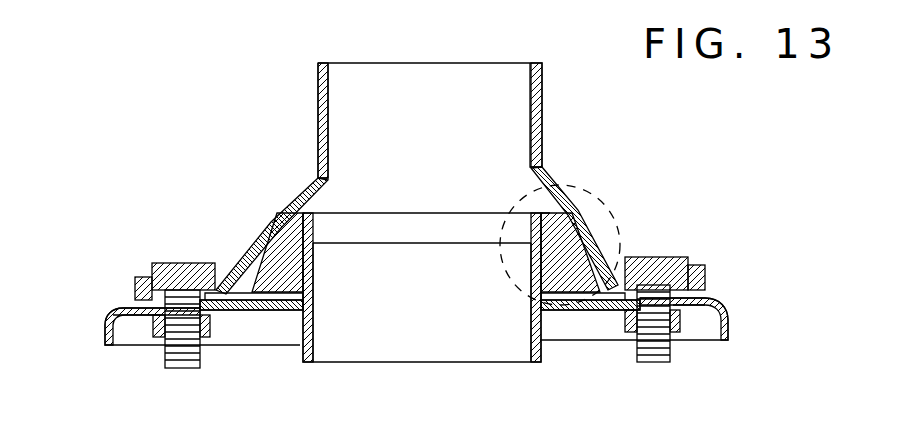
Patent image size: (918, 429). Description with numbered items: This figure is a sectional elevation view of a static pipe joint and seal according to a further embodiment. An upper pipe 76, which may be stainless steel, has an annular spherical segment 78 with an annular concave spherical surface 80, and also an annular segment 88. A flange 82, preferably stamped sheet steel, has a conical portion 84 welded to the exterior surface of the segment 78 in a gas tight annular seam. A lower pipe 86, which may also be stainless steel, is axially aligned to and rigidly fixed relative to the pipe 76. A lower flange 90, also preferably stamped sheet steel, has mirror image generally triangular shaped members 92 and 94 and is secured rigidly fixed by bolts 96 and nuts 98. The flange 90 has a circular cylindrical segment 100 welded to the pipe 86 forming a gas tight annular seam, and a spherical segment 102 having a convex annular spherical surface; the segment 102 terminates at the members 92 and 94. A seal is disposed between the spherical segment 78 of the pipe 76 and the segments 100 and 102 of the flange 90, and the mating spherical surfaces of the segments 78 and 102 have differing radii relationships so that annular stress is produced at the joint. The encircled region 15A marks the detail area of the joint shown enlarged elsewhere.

The pipe 76 is at (544, 100).
The annular spherical segment 78 is at (300, 188).
The annular concave spherical surface 80 is at (318, 202).
The flange 82 is at (278, 212).
The conical portion 84 is at (246, 252).
The pipe 86 is at (372, 364).
The annular segment 88 is at (318, 266).
The lower flange 90 is at (733, 298).
The generally triangular shaped member 92 is at (705, 341).
The generally triangular shaped member 94 is at (130, 348).
The bolts 96 is at (182, 370).
The nuts 98 is at (222, 338).
The circular cylindrical segment 100 is at (330, 235).
The spherical segment 102 is at (318, 293).
The detail region 15A is at (580, 188).